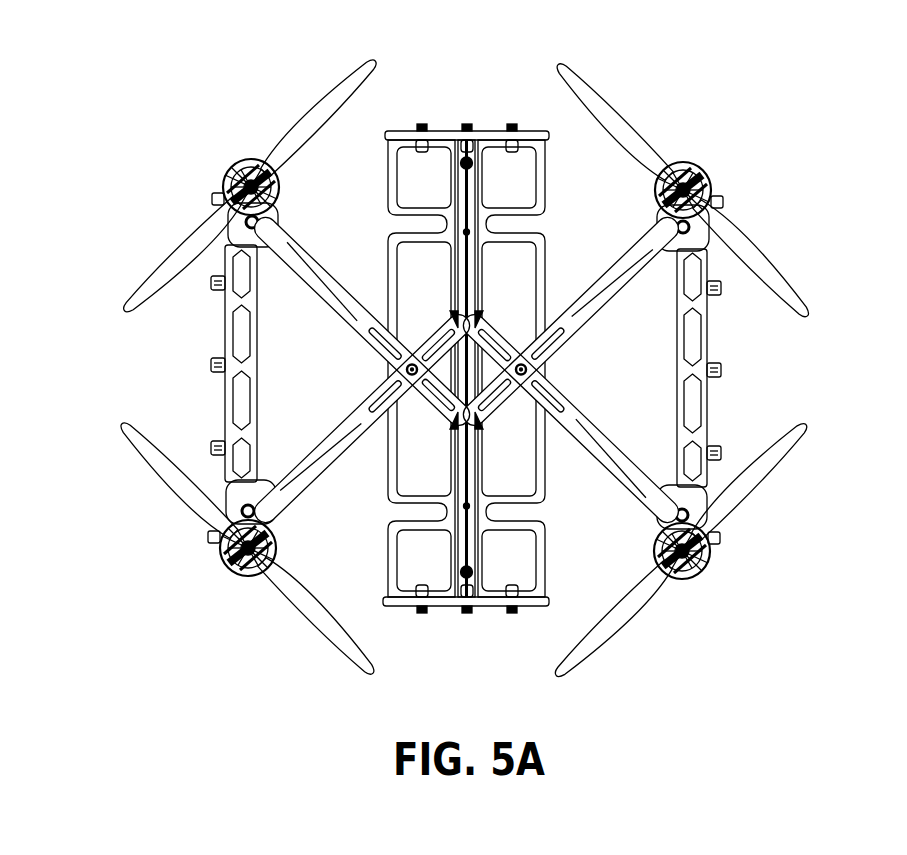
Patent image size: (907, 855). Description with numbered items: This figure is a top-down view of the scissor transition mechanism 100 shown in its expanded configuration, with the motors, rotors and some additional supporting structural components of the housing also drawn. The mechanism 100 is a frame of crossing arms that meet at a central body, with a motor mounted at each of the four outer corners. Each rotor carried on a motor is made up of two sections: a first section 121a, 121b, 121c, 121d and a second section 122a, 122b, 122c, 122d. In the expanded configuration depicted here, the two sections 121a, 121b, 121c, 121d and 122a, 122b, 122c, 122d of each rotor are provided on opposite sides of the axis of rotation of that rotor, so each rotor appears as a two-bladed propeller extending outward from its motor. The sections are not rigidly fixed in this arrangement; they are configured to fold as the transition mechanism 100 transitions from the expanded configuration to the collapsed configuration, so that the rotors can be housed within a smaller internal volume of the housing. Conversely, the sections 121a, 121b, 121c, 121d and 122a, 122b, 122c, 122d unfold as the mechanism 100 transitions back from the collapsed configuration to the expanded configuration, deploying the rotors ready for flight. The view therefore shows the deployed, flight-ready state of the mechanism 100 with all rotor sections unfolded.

The transition mechanism 100 is at (468, 370).
The first rotor section 121a is at (313, 103).
The first rotor section 121b is at (627, 118).
The first rotor section 121c is at (162, 482).
The first rotor section 121d is at (782, 463).
The second rotor section 122a is at (173, 250).
The second rotor section 122b is at (775, 260).
The second rotor section 122c is at (302, 618).
The second rotor section 122d is at (618, 633).